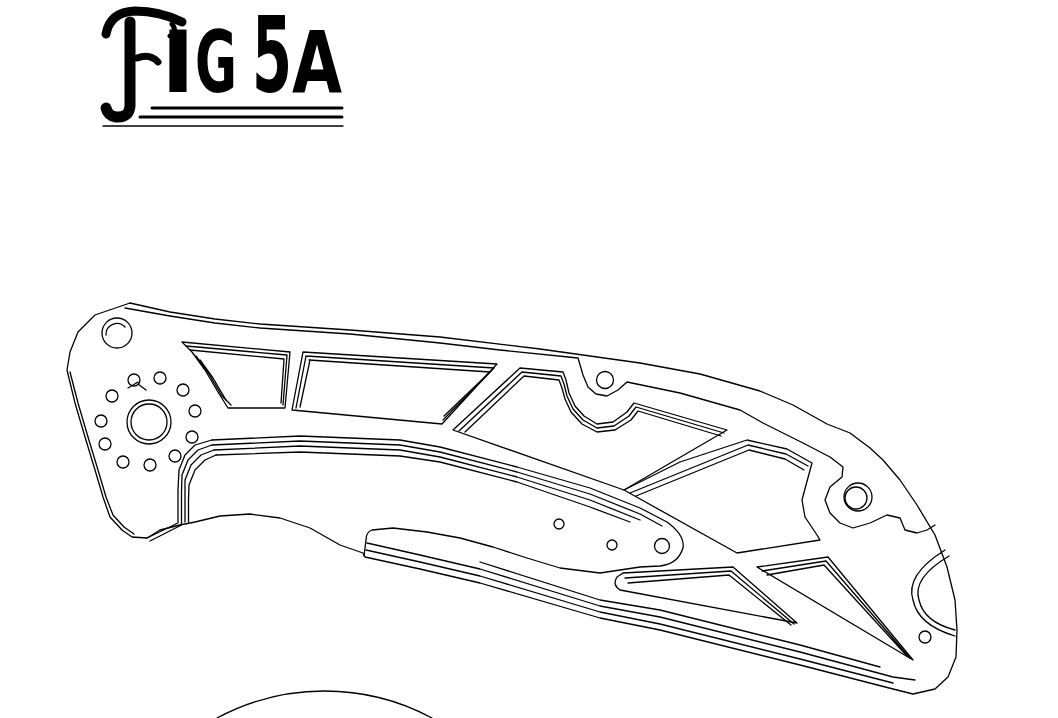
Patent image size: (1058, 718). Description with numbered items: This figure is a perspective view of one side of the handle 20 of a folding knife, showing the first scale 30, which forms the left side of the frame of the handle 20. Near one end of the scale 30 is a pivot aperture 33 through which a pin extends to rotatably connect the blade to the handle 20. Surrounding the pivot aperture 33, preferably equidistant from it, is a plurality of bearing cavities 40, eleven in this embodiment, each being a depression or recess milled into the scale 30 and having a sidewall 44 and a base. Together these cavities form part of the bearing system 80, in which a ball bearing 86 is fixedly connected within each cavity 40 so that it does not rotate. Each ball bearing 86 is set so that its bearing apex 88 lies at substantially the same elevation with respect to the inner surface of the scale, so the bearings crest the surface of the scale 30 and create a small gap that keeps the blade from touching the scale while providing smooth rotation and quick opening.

The handle 20 is at (500, 324).
The first scale 30 is at (762, 470).
The pivot aperture 33 is at (140, 431).
The bearing cavity 40 is at (166, 371).
The sidewall 44 is at (136, 374).
The bearing system 80 is at (138, 493).
The ball bearing 86 is at (130, 388).
The bearing apex 88 is at (140, 386).